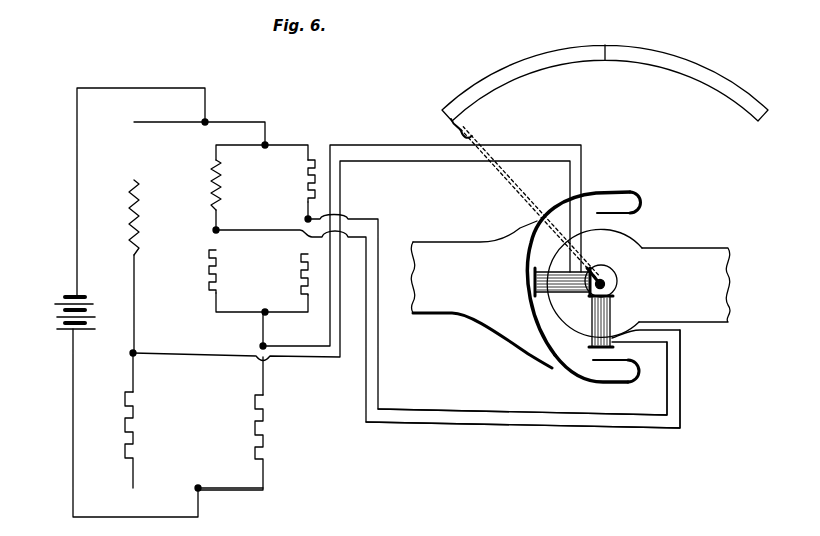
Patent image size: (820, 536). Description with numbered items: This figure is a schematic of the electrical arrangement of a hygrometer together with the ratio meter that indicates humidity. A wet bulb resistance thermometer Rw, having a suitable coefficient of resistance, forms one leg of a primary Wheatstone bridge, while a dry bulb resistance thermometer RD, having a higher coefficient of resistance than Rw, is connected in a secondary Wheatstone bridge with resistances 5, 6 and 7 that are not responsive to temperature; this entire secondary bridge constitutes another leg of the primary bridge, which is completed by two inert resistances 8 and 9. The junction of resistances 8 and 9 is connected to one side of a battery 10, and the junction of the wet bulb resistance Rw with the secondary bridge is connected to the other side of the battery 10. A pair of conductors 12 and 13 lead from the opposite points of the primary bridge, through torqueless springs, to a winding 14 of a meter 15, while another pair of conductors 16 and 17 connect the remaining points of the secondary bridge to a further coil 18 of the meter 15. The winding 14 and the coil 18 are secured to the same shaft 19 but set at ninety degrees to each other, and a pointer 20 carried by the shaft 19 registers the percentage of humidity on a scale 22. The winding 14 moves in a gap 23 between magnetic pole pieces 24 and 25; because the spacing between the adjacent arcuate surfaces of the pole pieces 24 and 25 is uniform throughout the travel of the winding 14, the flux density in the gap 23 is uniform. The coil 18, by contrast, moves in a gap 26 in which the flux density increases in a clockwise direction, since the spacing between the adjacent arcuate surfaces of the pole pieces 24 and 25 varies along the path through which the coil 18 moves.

The wet bulb resistance thermometer Rw is at (133, 233).
The dry bulb resistance thermometer RD is at (216, 205).
The resistance 5 is at (306, 196).
The resistance 6 is at (211, 285).
The resistance 7 is at (302, 280).
The inert resistance 8 is at (138, 426).
The inert resistance 9 is at (270, 426).
The battery 10 is at (63, 330).
The conductor 12 is at (293, 360).
The conductor 13 is at (312, 340).
The winding 14 is at (534, 282).
The meter 15 is at (635, 229).
The conductor 16 is at (367, 428).
The conductor 17 is at (382, 398).
The coil 18 is at (612, 316).
The shaft 19 is at (608, 279).
The pointer 20 is at (474, 137).
The scale 22 is at (690, 55).
The gap 23 is at (597, 212).
The magnetic pole piece 24 is at (513, 232).
The magnetic pole piece 25 is at (667, 248).
The gap 26 is at (574, 346).